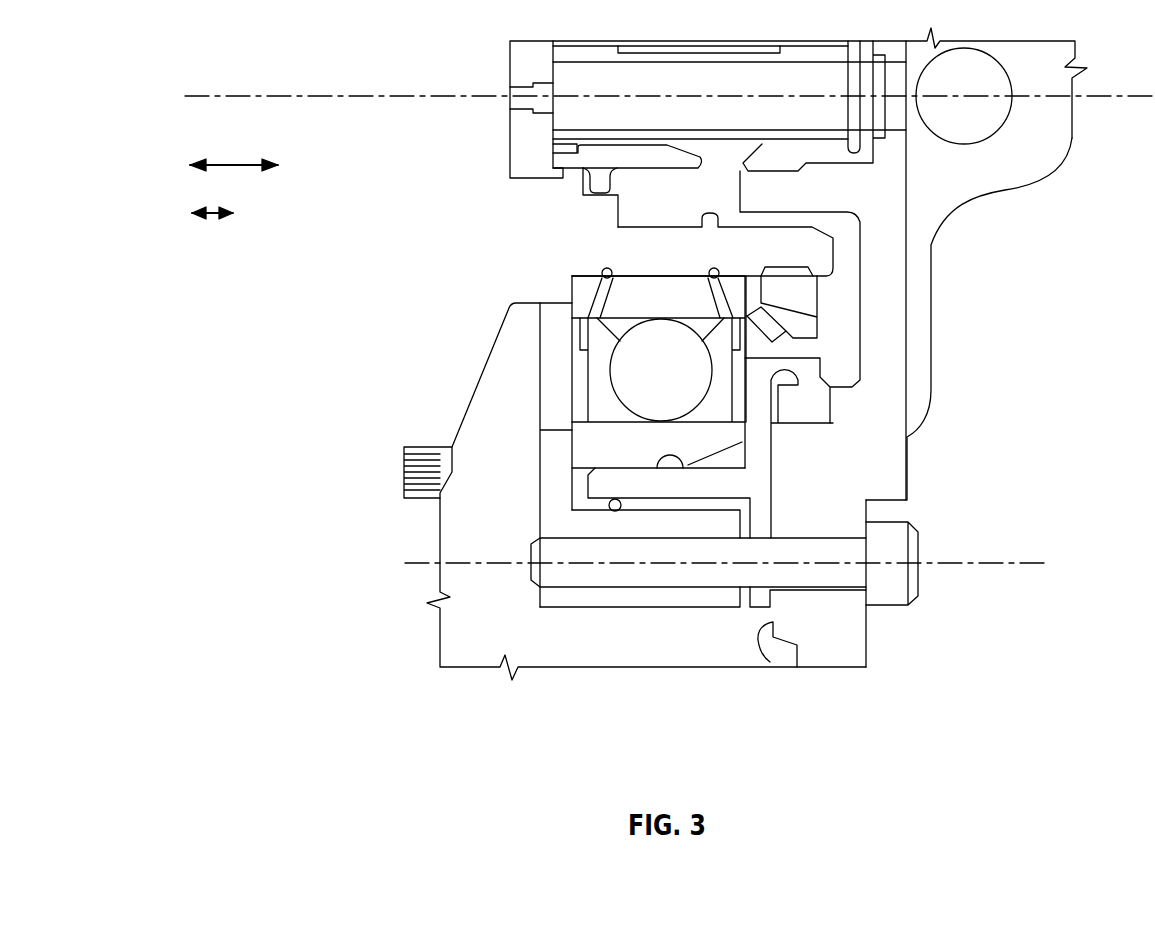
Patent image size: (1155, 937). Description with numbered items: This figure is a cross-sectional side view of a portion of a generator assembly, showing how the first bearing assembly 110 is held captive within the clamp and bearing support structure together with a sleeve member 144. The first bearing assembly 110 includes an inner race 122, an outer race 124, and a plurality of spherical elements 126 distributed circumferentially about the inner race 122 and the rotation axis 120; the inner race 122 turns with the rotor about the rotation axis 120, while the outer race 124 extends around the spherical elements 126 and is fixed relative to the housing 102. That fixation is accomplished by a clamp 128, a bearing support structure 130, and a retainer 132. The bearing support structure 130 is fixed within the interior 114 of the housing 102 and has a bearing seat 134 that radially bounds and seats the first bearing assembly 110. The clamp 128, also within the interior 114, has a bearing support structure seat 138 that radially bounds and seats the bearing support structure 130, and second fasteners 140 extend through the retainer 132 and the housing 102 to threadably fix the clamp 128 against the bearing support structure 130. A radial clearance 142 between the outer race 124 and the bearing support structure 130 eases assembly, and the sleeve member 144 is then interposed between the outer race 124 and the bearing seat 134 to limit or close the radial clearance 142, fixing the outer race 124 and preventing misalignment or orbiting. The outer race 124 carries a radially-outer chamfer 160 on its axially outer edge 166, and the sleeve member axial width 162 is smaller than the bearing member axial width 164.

The housing 102 is at (767, 660).
The first bearing assembly 110 is at (529, 284).
The interior 114 is at (518, 428).
The rotation axis 120 is at (1112, 95).
The inner race 122 is at (645, 298).
The outer race 124 is at (612, 449).
The spherical elements 126 is at (682, 382).
The clamp 128 is at (548, 472).
The bearing support structure 130 is at (750, 495).
The retainer 132 is at (885, 470).
The bearing seat 134 is at (680, 462).
The bearing support structure seat 138 is at (615, 511).
The second fasteners 140 is at (903, 560).
The radial clearance 142 is at (620, 464).
The sleeve member 144 is at (732, 458).
The radially-outer chamfer 160 is at (745, 440).
The sleeve member axial width 162 is at (213, 215).
The bearing member axial width 164 is at (227, 165).
The axially outer edge 166 is at (750, 420).